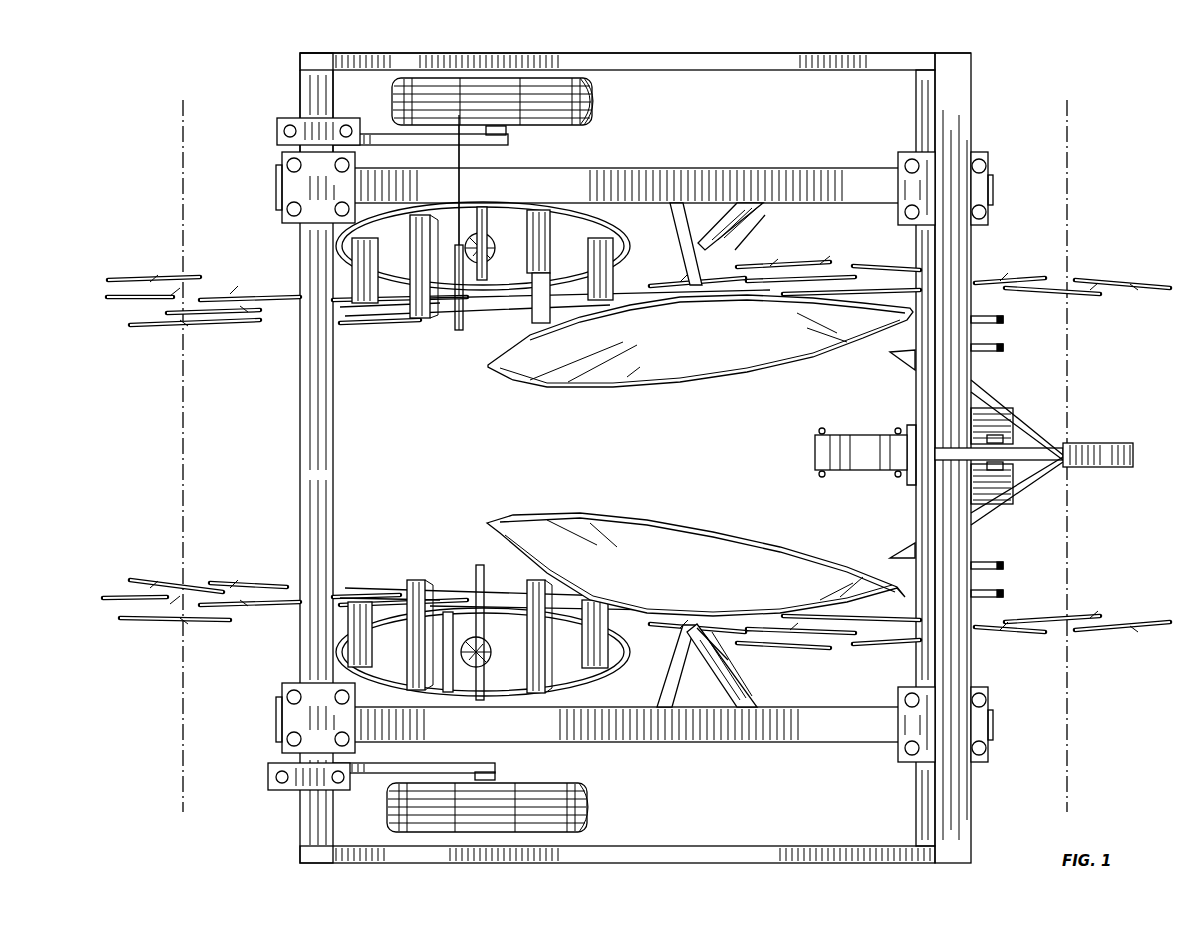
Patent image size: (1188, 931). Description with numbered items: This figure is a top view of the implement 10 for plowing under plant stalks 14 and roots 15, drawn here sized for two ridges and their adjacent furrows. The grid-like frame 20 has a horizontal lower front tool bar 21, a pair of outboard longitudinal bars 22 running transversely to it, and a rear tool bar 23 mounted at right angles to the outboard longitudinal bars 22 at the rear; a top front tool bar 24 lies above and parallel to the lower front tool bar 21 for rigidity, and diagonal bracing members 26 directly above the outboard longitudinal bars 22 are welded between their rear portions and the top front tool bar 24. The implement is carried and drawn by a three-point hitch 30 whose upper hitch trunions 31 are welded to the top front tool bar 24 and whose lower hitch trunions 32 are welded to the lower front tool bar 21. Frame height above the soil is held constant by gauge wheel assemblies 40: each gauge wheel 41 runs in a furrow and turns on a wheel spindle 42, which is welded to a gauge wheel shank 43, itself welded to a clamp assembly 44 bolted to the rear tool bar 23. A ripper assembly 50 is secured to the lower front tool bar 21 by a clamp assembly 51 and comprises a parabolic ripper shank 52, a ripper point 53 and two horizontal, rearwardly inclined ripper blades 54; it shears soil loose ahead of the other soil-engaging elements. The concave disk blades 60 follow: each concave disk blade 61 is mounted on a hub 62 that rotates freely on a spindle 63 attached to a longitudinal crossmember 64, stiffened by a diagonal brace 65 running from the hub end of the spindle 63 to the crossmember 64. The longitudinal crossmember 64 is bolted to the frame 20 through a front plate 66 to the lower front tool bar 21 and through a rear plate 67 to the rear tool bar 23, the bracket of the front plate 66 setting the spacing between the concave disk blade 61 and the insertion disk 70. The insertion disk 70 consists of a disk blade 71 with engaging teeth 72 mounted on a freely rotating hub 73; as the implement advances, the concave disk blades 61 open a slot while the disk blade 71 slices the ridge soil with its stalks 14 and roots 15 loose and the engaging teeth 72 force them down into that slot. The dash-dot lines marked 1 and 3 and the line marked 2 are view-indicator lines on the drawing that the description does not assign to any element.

The first plane line 1 is at (1073, 111).
The rotor axis 2 is at (464, 449).
The second plane line 3 is at (189, 121).
The implement for plowing under plant stalks and roots 10 is at (226, 72).
The plant stalks 14 is at (1100, 272).
The roots 15 is at (258, 262).
The frame 20 is at (295, 105).
The lower front tool bar 21 is at (927, 112).
The outboard longitudinal bars 22 is at (300, 60).
The rear tool bar 23 is at (335, 95).
The top front tool bar 24 is at (966, 108).
The diagonal bracing members 26 is at (686, 70).
The three-point hitch 30 is at (1011, 357).
The upper hitch trunions 31 is at (1010, 450).
The lower hitch trunions 32 is at (1004, 320).
The gauge wheel assemblies 40 is at (598, 101).
The gauge wheels 41 is at (590, 122).
The wheel spindle 42 is at (506, 135).
The gauge wheel shank 43 is at (500, 145).
The clamp assembly 44 is at (322, 128).
The ripper assembly 50 is at (1097, 473).
The clamp assembly 51 is at (870, 440).
The parabolic ripper shank 52 is at (1055, 468).
The ripper point 53 is at (1098, 442).
The ripper blades 54 is at (990, 410).
The concave disk blades 60 is at (740, 374).
The concave disk blade 61 is at (722, 346).
The hub 62 is at (760, 250).
The spindle 63 is at (680, 250).
The longitudinal crossmember 64 is at (745, 190).
The brace 65 is at (735, 250).
The front plate 66 is at (902, 178).
The rear plate 67 is at (330, 189).
The insertion disk 70 is at (630, 223).
The disk blade 71 is at (510, 223).
The engaging teeth 72 is at (418, 212).
The hub 73 is at (492, 256).